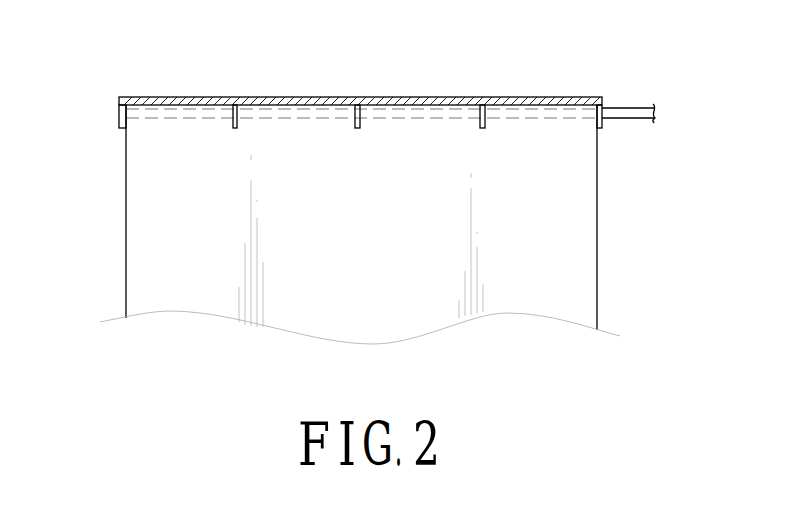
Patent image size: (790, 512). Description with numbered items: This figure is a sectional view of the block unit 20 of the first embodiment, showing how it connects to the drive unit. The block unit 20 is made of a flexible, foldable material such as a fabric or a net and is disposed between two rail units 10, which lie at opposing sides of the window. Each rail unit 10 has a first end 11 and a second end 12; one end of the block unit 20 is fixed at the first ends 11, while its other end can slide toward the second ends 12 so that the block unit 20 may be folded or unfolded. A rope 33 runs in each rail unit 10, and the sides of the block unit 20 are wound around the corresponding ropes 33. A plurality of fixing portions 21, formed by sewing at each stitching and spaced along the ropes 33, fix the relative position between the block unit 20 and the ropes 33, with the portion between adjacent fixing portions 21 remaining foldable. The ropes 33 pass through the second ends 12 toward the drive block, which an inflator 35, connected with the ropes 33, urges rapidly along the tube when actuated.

The rail unit 10 is at (402, 97).
The first end 11 is at (119, 99).
The second end 12 is at (602, 100).
The block unit 20 is at (126, 213).
The fixing portion 21 is at (235, 105).
The rope 33 is at (627, 118).
The inflator 35 is at (150, 108).